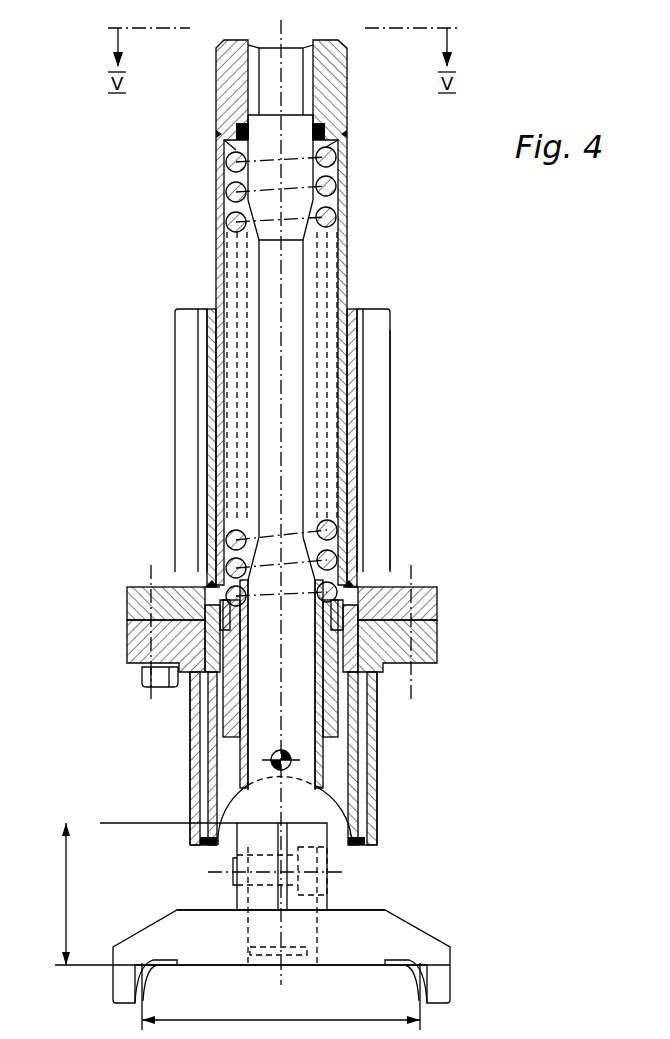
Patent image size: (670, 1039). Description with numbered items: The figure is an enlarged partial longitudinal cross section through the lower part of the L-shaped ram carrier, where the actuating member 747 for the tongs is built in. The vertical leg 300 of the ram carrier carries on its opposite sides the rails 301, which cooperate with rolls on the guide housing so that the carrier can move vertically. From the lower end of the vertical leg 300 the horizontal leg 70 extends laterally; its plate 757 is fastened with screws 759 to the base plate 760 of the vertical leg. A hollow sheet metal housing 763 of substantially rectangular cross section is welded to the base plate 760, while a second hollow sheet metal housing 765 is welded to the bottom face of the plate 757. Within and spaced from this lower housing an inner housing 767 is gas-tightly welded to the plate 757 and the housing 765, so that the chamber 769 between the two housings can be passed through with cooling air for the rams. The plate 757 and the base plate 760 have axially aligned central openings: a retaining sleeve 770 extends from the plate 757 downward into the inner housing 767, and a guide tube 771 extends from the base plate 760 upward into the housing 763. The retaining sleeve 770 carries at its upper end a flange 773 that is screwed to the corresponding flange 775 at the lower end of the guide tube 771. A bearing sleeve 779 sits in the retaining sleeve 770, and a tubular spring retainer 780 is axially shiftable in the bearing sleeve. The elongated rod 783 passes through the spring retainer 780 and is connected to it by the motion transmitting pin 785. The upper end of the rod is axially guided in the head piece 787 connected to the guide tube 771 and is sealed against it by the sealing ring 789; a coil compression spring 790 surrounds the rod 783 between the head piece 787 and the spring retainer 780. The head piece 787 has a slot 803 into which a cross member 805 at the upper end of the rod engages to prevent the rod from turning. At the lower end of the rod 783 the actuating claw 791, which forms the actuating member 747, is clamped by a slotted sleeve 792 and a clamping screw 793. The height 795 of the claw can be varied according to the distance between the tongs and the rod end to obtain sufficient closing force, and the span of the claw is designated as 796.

The horizontal leg 70 is at (190, 740).
The vertical leg 300 is at (388, 468).
The rails 301 is at (186, 441).
The actuating member 747 is at (139, 920).
The plate 757 is at (437, 650).
The screws 759 is at (142, 682).
The base plate 760 is at (437, 606).
The hollow sheet metal housing 763 is at (338, 527).
The hollow sheet metal housing 765 is at (197, 770).
The inner housing 767 is at (213, 797).
The chamber 769 is at (208, 817).
The retaining sleeve 770 is at (302, 746).
The guide tube 771 is at (346, 538).
The flange 773 is at (362, 645).
The flange 775 is at (362, 612).
The bearing sleeve 779 is at (338, 733).
The tubular spring retainer 780 is at (330, 708).
The rod 783 is at (292, 45).
The motion transmitting pin 785 is at (310, 785).
The head piece 787 is at (347, 100).
The sealing ring 789 is at (348, 134).
The coil compression spring 790 is at (347, 225).
The actuating claw 791 is at (408, 926).
The slotted sleeve 792 is at (328, 843).
The clamping screw 793 is at (330, 888).
The height 795 is at (66, 880).
The span 796 is at (215, 1018).
The slot 803 is at (262, 45).
The cross member 805 is at (274, 60).